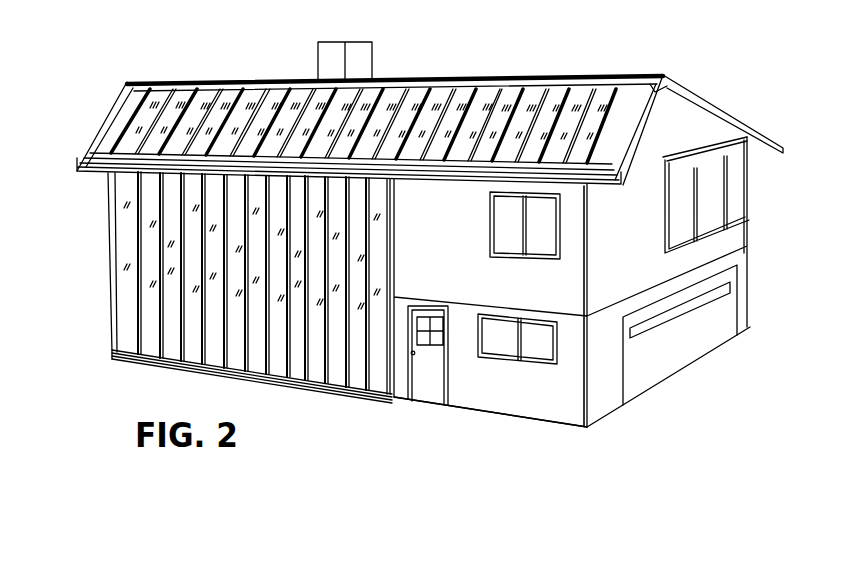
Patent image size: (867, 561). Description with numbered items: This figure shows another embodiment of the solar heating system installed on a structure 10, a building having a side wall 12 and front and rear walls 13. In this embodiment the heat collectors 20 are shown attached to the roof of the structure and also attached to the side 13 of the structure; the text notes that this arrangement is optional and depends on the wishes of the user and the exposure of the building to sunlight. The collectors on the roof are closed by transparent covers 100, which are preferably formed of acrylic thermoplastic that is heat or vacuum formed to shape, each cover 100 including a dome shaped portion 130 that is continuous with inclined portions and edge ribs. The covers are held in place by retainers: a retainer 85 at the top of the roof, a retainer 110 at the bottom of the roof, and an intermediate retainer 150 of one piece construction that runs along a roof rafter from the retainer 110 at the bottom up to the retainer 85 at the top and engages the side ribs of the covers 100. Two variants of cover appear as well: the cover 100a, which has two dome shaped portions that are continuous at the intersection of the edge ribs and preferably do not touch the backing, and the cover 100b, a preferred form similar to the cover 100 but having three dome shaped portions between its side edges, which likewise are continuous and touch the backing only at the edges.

The structure 10 is at (513, 46).
The side wall 12 is at (107, 208).
The front and rear walls 13 is at (512, 397).
The heat collector 20 is at (307, 88).
The retainer 85 is at (602, 77).
The cover 100 is at (163, 100).
The cover 100a is at (133, 113).
The cover 100b is at (206, 101).
The retainer 110 is at (467, 165).
The dome shaped portion 130 is at (182, 145).
The intermediate retainer 150 is at (182, 100).